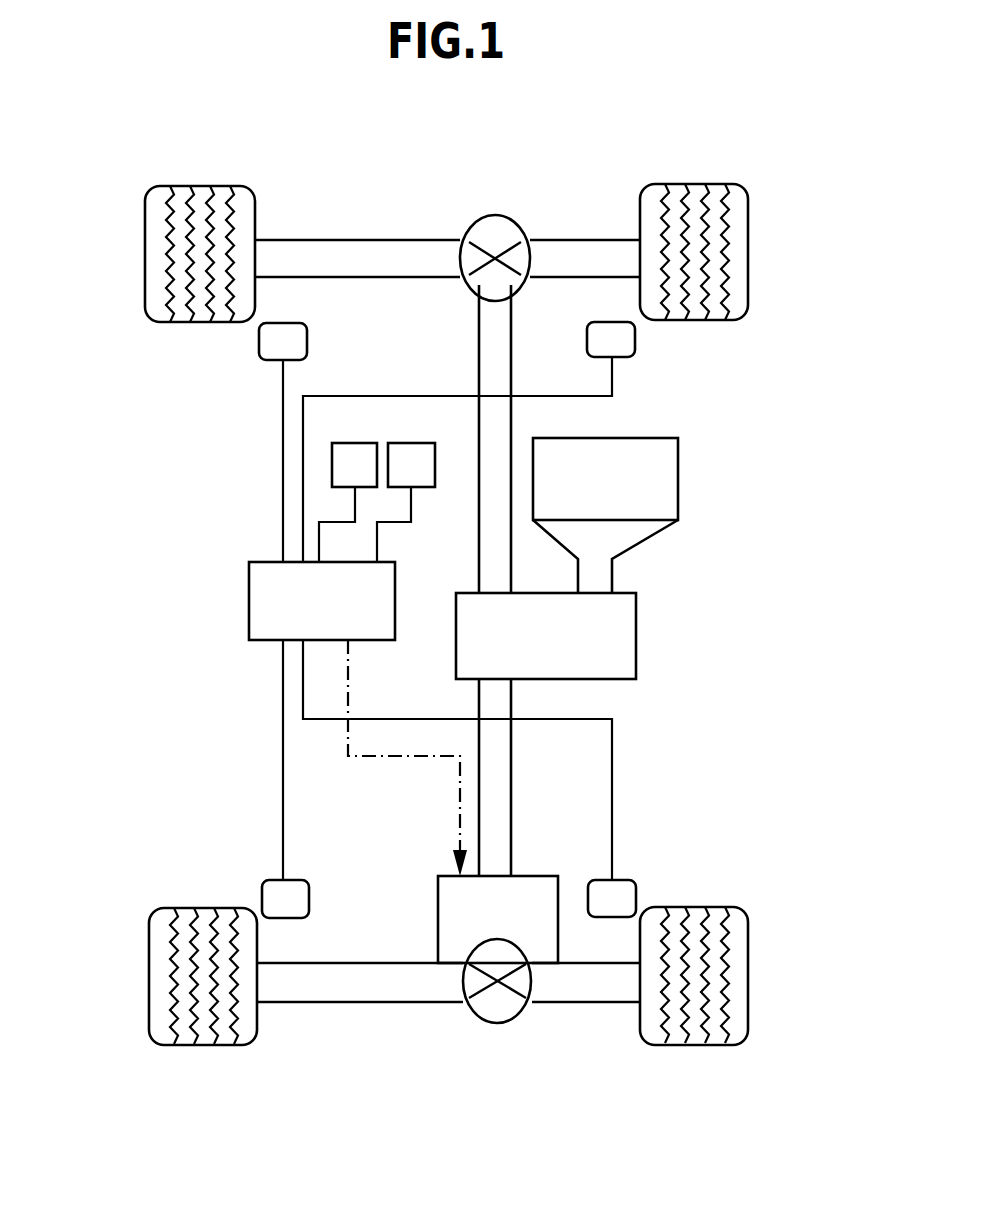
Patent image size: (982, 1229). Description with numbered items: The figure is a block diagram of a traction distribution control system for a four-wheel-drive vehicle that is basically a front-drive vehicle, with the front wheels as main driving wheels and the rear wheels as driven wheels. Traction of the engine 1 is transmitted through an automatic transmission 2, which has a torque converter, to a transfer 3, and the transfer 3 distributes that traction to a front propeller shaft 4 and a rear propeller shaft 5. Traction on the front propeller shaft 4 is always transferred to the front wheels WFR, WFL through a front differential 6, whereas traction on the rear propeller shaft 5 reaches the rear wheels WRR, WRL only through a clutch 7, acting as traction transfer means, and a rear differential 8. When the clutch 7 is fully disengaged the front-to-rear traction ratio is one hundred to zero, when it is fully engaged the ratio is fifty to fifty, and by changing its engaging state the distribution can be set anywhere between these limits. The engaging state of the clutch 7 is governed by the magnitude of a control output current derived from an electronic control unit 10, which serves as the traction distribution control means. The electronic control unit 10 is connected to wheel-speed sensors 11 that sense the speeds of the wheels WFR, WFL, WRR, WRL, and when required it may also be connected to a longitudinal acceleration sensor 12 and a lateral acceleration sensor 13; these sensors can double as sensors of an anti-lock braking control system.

The engine 1 is at (680, 485).
The automatic transmission 2 is at (643, 542).
The transfer 3 is at (638, 637).
The front propeller shaft 4 is at (513, 354).
The rear propeller shaft 5 is at (513, 765).
The front differential 6 is at (492, 216).
The clutch 7 is at (540, 875).
The rear differential 8 is at (497, 1023).
The electronic control unit 10 is at (247, 602).
The wheel-speed sensors 11 is at (258, 348).
The longitudinal acceleration sensor 12 is at (360, 443).
The lateral acceleration sensor 13 is at (416, 443).
The front left wheel WFL is at (147, 254).
The front right wheel WFR is at (749, 252).
The rear left wheel WRL is at (149, 975).
The rear right wheel WRR is at (749, 975).